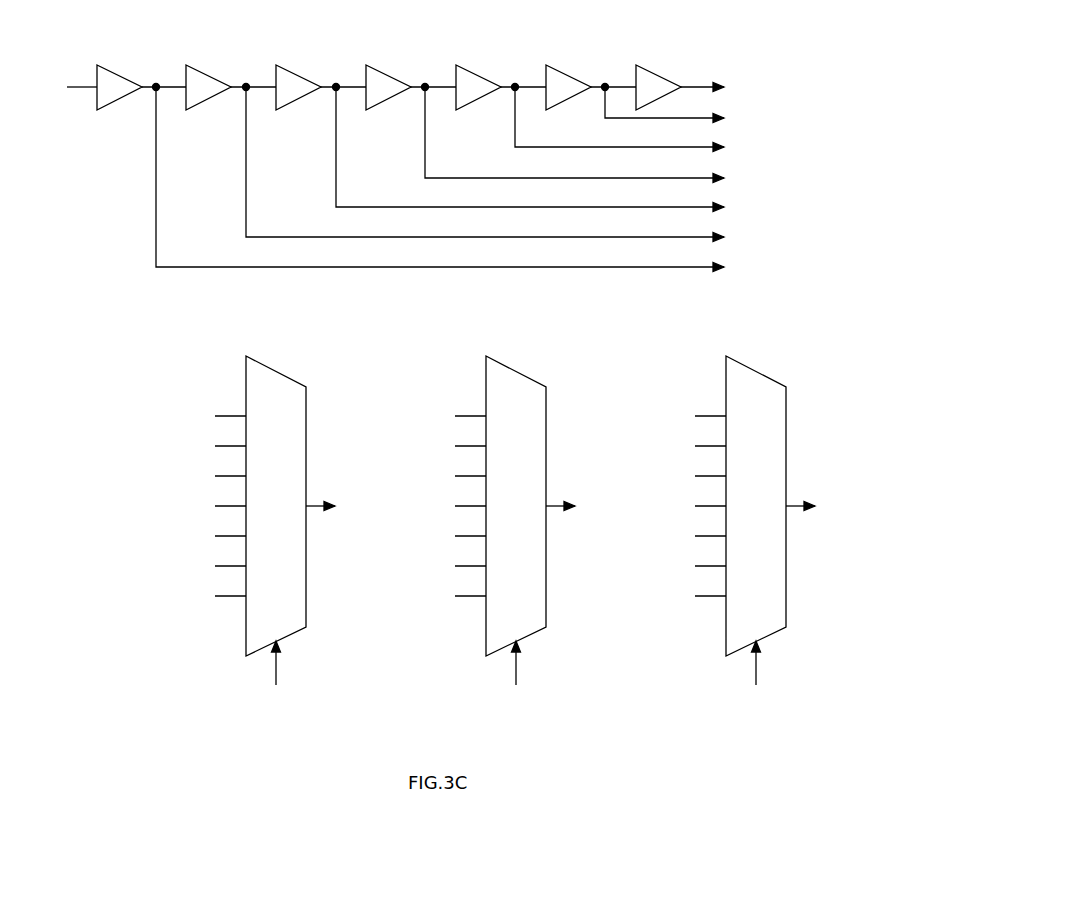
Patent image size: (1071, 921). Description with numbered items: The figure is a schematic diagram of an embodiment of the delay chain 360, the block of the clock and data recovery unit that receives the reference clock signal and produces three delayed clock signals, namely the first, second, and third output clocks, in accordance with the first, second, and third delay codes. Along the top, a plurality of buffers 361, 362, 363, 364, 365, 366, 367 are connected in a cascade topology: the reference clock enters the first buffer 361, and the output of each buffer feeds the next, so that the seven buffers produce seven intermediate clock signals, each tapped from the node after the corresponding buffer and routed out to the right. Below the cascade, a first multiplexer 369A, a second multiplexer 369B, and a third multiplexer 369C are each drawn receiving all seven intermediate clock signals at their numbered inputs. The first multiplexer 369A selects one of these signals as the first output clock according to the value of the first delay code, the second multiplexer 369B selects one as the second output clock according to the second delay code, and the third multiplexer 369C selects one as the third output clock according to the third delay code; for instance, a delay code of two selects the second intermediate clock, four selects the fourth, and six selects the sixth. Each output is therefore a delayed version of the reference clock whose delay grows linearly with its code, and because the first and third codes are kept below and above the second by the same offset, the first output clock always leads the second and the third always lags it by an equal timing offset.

The delay chain 360 is at (127, 657).
The buffer 361 is at (110, 70).
The buffer 362 is at (199, 70).
The buffer 363 is at (289, 70).
The buffer 364 is at (379, 70).
The buffer 365 is at (469, 70).
The buffer 366 is at (559, 70).
The buffer 367 is at (649, 70).
The first multiplexer 369A is at (276, 369).
The second multiplexer 369B is at (516, 369).
The third multiplexer 369C is at (756, 369).